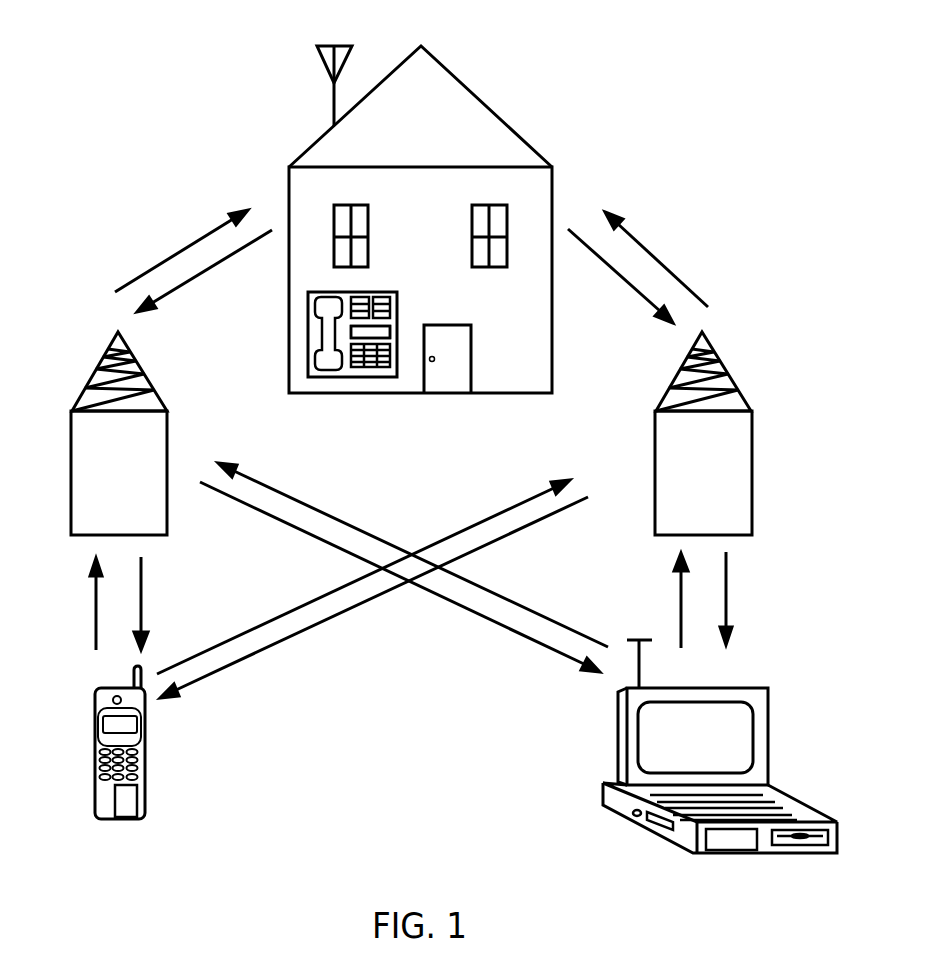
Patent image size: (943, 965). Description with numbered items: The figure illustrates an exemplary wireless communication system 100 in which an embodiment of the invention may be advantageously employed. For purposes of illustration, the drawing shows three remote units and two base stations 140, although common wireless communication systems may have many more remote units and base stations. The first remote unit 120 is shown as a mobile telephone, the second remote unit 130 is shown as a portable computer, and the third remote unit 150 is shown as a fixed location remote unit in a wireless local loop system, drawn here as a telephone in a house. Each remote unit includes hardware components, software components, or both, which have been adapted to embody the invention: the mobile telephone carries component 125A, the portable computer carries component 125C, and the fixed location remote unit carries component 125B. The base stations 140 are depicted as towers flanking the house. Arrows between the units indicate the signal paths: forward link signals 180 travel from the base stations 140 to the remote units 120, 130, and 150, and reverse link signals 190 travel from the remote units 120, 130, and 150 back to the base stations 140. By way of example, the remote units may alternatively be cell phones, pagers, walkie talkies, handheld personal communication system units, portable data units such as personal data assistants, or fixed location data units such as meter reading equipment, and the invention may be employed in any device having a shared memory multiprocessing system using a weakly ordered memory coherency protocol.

The wireless communication system 100 is at (97, 55).
The remote unit 120 is at (96, 698).
The component 125A is at (128, 803).
The component 125B is at (378, 381).
The component 125C is at (738, 838).
The remote unit 130 is at (748, 688).
The base station 140 is at (95, 370).
The remote unit 150 is at (307, 344).
The forward link signals 180 is at (188, 244).
The reverse link signals 190 is at (190, 280).